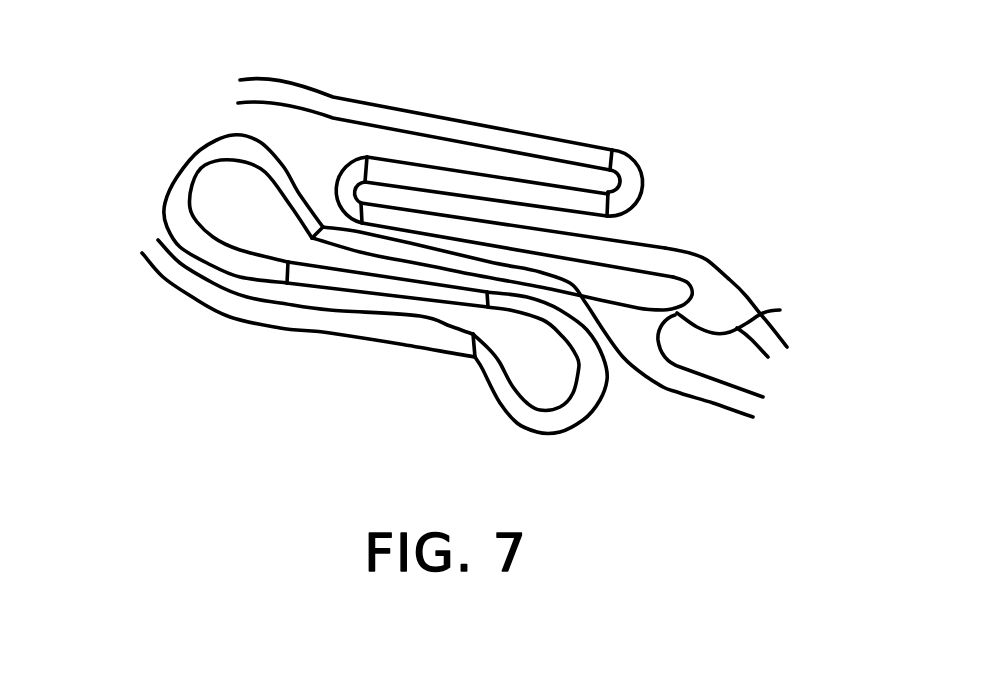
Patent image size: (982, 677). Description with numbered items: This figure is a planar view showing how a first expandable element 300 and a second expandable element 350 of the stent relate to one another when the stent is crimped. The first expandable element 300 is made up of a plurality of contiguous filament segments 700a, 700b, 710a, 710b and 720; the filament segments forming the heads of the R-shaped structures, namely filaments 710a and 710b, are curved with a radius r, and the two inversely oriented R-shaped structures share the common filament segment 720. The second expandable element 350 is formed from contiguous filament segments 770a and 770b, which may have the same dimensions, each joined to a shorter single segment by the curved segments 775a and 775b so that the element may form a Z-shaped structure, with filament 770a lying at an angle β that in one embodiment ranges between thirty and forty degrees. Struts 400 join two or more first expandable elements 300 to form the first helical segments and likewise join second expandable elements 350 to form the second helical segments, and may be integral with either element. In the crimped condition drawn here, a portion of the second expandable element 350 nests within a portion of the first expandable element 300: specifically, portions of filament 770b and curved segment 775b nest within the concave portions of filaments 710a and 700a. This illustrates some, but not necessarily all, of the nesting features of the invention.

The first expandable element 300 is at (147, 240).
The second expandable element 350 is at (237, 90).
The strut 400 is at (780, 310).
The filament segment 700a is at (572, 287).
The filament segment 700b is at (243, 308).
The filament segment 710a is at (180, 163).
The filament segment 710b is at (580, 417).
The filament segment 720 is at (350, 283).
The filament segment 770a is at (453, 128).
The filament segment 770b is at (462, 230).
The curved segment 775a is at (638, 165).
The curved segment 775b is at (348, 177).